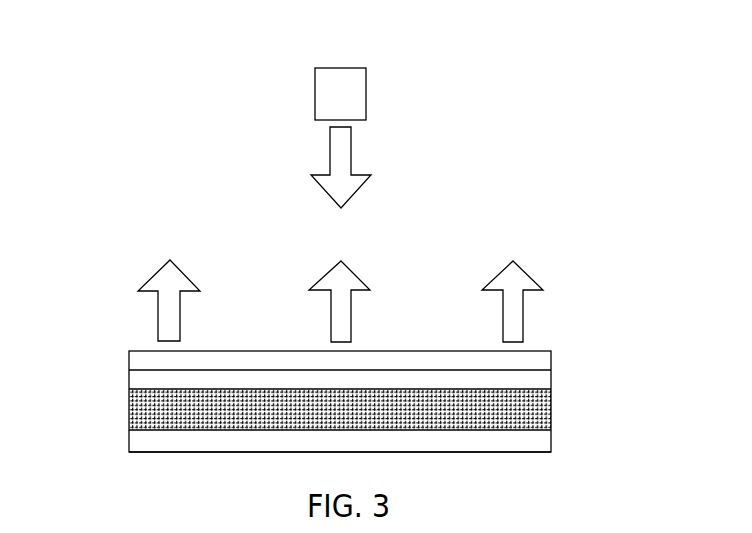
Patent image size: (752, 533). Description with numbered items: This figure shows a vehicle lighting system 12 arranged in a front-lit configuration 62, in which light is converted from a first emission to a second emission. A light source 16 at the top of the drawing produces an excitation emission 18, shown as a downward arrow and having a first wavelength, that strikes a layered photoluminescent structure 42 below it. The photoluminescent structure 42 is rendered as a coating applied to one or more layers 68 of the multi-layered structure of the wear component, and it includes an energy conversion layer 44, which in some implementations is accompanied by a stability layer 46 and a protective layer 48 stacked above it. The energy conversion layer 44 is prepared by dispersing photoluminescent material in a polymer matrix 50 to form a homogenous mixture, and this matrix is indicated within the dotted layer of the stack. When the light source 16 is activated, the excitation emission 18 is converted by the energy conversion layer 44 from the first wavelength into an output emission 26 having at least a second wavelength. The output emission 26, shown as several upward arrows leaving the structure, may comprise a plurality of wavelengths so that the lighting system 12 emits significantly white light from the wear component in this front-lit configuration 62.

The lighting system 12 is at (145, 147).
The light source 16 is at (340, 94).
The excitation emission 18 is at (330, 150).
The output emission 26 is at (190, 278).
The photoluminescent structure 42 is at (314, 390).
The energy conversion layer 44 is at (548, 408).
The stability layer 46 is at (548, 379).
The protective layer 48 is at (547, 363).
The polymer matrix 50 is at (150, 408).
The front-lit configuration 62 is at (438, 189).
The layers 68 is at (547, 440).